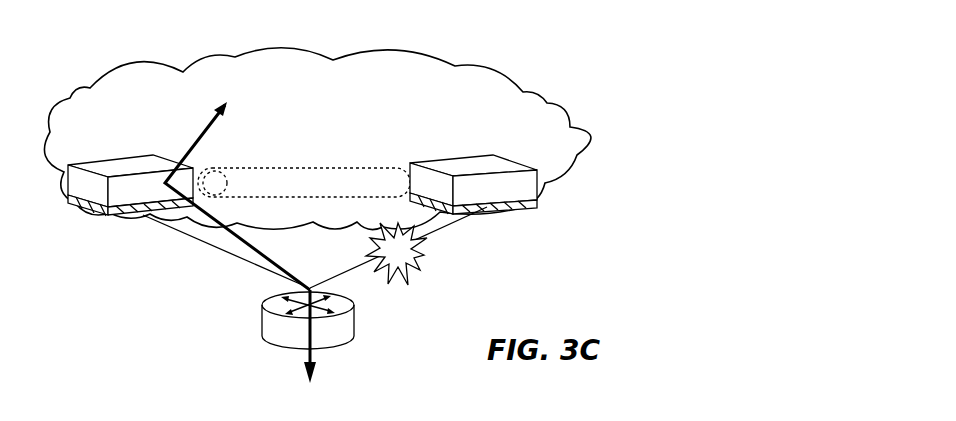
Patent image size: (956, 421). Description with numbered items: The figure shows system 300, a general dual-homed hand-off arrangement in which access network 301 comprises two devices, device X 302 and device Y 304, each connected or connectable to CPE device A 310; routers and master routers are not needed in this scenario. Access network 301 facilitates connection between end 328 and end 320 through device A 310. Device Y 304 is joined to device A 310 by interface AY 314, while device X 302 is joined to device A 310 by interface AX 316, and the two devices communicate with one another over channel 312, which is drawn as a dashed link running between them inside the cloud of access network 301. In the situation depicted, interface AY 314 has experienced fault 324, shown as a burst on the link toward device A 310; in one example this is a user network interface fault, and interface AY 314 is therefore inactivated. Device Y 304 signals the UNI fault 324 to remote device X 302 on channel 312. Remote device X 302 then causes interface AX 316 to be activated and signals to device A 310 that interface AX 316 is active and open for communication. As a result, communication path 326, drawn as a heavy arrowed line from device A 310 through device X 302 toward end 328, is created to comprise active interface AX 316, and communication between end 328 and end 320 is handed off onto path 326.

The system 300 is at (599, 70).
The access network 301 is at (292, 52).
The device X 302 is at (143, 162).
The device Y 304 is at (490, 154).
The CPE device A 310 is at (356, 318).
The channel 312 is at (296, 167).
The interface AY 314 is at (455, 230).
The interface AX 316 is at (222, 255).
The end 320 is at (314, 374).
The fault 324 is at (408, 278).
The communication path 326 is at (200, 135).
The end 328 is at (231, 104).